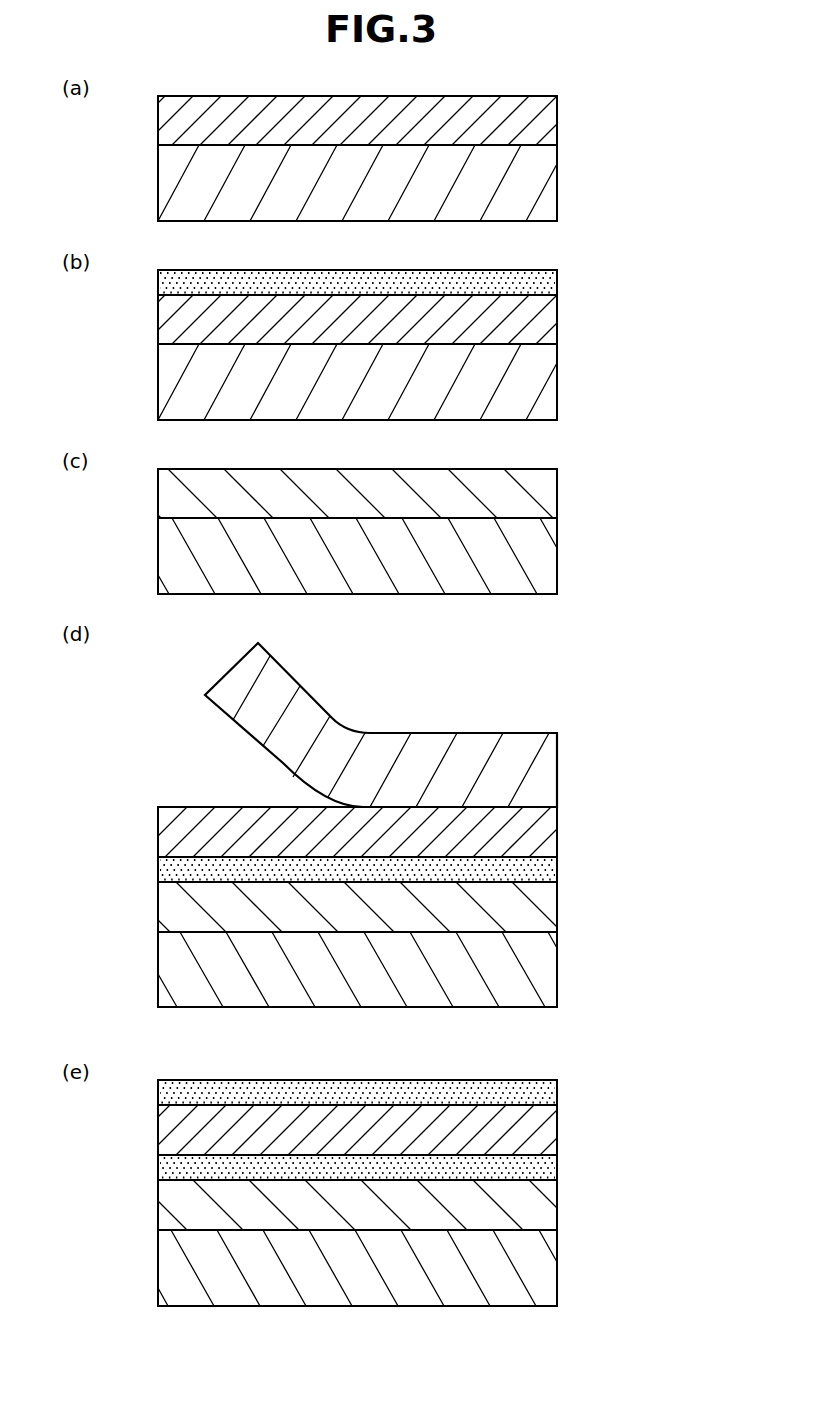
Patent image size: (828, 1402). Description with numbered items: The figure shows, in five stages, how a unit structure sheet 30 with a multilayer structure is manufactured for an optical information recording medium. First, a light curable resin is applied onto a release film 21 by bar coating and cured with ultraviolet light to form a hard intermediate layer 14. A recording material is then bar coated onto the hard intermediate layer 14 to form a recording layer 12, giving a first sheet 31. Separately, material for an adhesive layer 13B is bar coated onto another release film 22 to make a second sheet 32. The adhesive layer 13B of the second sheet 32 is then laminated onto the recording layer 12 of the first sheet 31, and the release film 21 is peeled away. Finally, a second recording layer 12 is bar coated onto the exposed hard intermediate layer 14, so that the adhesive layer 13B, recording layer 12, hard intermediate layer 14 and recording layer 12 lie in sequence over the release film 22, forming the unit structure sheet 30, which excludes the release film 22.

The recording layer 12 is at (546, 283).
The adhesive layer 13B is at (546, 498).
The hard intermediate layer 14 is at (546, 123).
The release film 21 is at (548, 183).
The release film 22 is at (546, 558).
The unit structure sheet 30 is at (628, 1082).
The first sheet 31 is at (633, 298).
The second sheet 32 is at (633, 473).